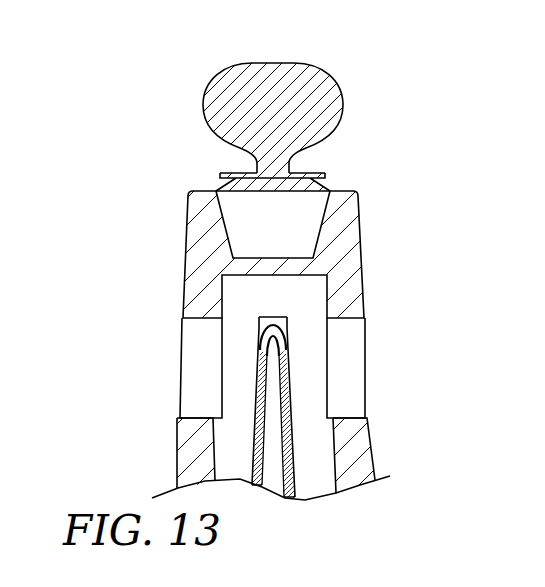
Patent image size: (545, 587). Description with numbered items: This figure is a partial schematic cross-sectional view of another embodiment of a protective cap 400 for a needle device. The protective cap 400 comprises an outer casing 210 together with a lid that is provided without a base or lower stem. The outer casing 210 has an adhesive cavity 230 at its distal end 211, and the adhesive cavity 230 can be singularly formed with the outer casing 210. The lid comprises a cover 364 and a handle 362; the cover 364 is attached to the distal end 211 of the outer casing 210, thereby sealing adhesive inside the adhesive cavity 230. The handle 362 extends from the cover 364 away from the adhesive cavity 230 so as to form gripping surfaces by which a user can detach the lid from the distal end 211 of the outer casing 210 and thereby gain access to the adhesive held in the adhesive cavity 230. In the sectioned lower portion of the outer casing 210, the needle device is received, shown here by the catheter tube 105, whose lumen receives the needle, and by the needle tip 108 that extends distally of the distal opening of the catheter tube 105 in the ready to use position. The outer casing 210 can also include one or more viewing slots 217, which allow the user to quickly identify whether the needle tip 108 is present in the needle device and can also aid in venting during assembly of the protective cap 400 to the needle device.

The handle 362 is at (332, 72).
The cover 364 is at (352, 187).
The adhesive cavity 230 is at (287, 217).
The protective cap 400 is at (402, 257).
The distal end 211 is at (207, 188).
The outer casing 210 is at (368, 425).
The viewing slots 217 is at (266, 317).
The needle tip 108 is at (262, 336).
The catheter tube 105 is at (252, 433).